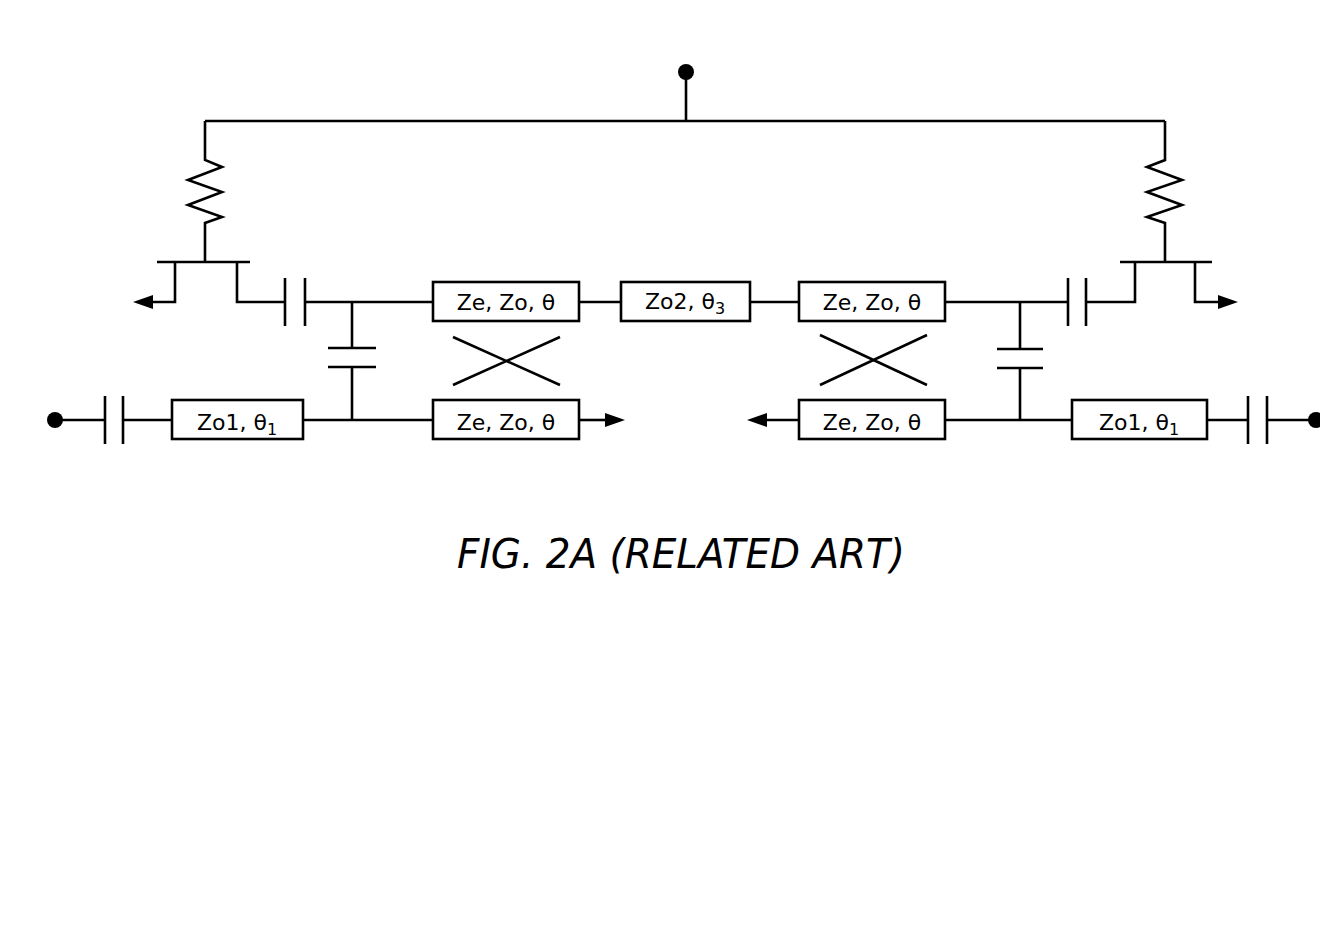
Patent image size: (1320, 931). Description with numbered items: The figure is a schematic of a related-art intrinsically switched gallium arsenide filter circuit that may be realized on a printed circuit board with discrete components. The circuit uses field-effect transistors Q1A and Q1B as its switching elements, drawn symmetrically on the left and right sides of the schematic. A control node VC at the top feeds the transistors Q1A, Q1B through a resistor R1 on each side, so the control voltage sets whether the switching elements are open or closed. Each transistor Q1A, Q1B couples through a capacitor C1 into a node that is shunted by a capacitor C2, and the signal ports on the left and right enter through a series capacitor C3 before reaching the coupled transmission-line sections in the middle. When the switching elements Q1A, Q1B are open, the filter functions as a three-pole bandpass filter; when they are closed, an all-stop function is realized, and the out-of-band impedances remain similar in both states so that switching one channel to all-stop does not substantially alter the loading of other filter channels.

The control voltage supply node VC is at (685, 80).
The bias resistor R1 is at (681, 191).
The field-effect transistor Q1A is at (209, 297).
The field-effect transistor Q1B is at (1162, 296).
The first capacitor C1 is at (687, 284).
The second capacitor C2 is at (682, 361).
The third capacitor C3 is at (683, 403).